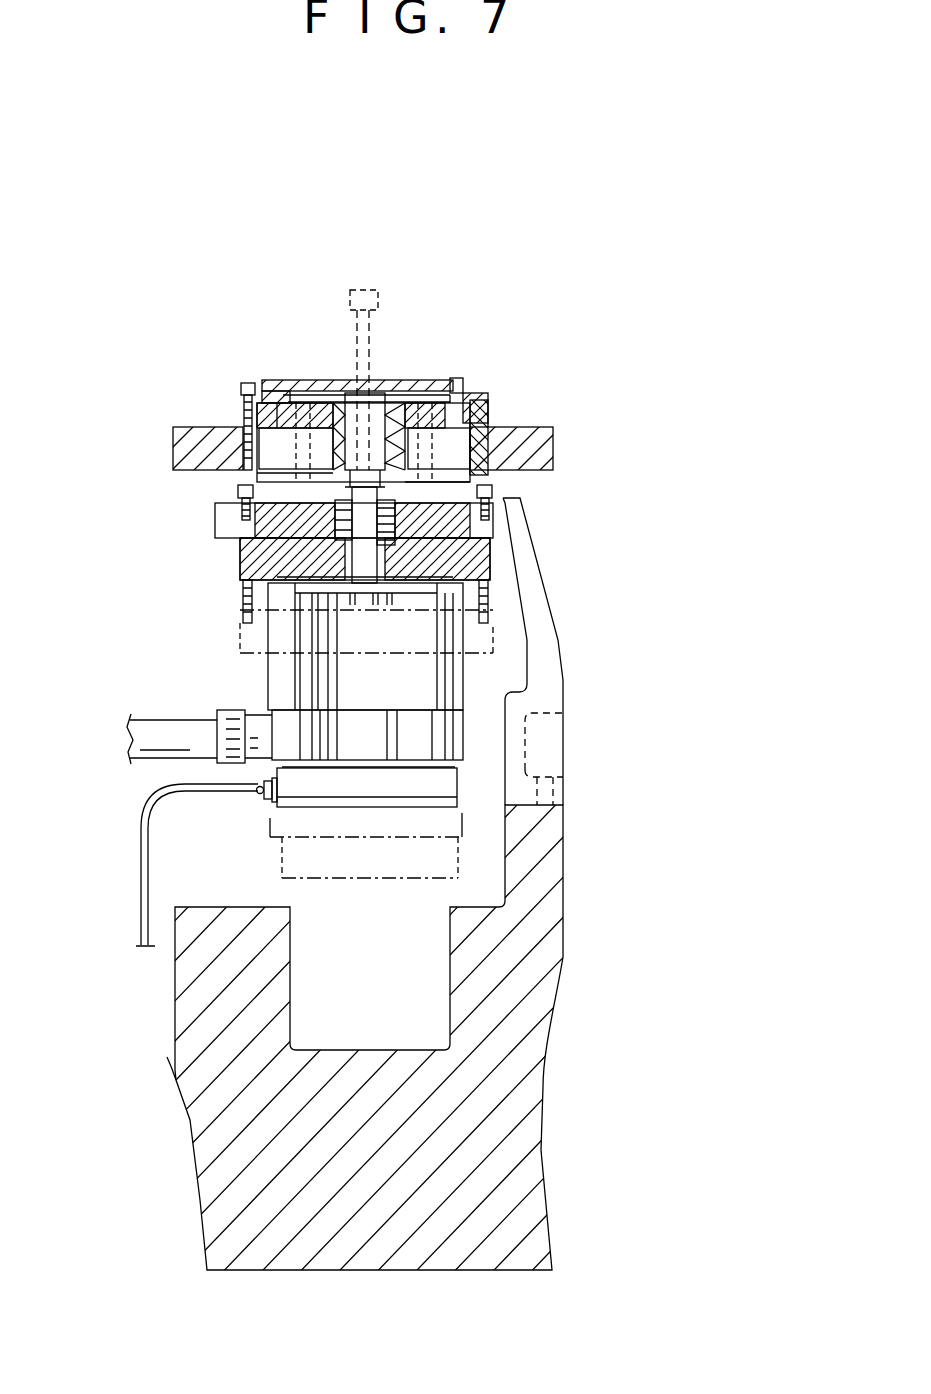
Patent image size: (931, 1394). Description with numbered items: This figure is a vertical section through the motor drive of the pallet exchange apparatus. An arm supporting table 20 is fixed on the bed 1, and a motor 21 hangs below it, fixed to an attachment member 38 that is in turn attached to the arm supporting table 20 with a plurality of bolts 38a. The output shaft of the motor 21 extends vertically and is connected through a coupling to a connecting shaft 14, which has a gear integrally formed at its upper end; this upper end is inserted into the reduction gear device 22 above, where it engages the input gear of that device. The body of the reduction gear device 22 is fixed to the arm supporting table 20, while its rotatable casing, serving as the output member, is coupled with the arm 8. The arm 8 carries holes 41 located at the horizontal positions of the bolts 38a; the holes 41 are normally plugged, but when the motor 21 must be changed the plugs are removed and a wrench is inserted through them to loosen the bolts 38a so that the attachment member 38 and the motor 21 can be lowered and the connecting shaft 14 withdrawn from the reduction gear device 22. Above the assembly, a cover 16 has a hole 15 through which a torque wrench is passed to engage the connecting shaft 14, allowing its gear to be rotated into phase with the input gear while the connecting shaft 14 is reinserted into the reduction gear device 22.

The bed 1 is at (537, 957).
The arm 8 is at (547, 443).
The connecting shaft 14 is at (345, 486).
The hole 15 is at (363, 383).
The cover 16 is at (307, 378).
The arm supporting table 20 is at (545, 692).
The motor 21 is at (428, 670).
The reduction gear device 22 is at (452, 410).
The attachment member 38 is at (470, 567).
The bolts 38a is at (237, 493).
The holes 41 is at (490, 433).